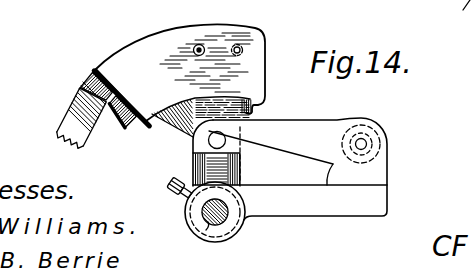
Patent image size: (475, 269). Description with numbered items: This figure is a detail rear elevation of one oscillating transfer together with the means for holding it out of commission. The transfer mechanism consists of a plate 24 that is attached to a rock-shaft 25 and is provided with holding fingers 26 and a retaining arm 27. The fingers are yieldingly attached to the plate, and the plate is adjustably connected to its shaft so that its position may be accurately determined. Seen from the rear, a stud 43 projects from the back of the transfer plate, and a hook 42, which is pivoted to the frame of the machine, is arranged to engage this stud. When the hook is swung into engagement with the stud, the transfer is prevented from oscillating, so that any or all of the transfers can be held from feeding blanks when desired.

The plate 24 is at (180, 81).
The rock-shaft 25 is at (206, 222).
The holding fingers 26 is at (93, 70).
The retaining arm 27 is at (56, 123).
The hook 42 is at (324, 126).
The stud 43 is at (243, 127).